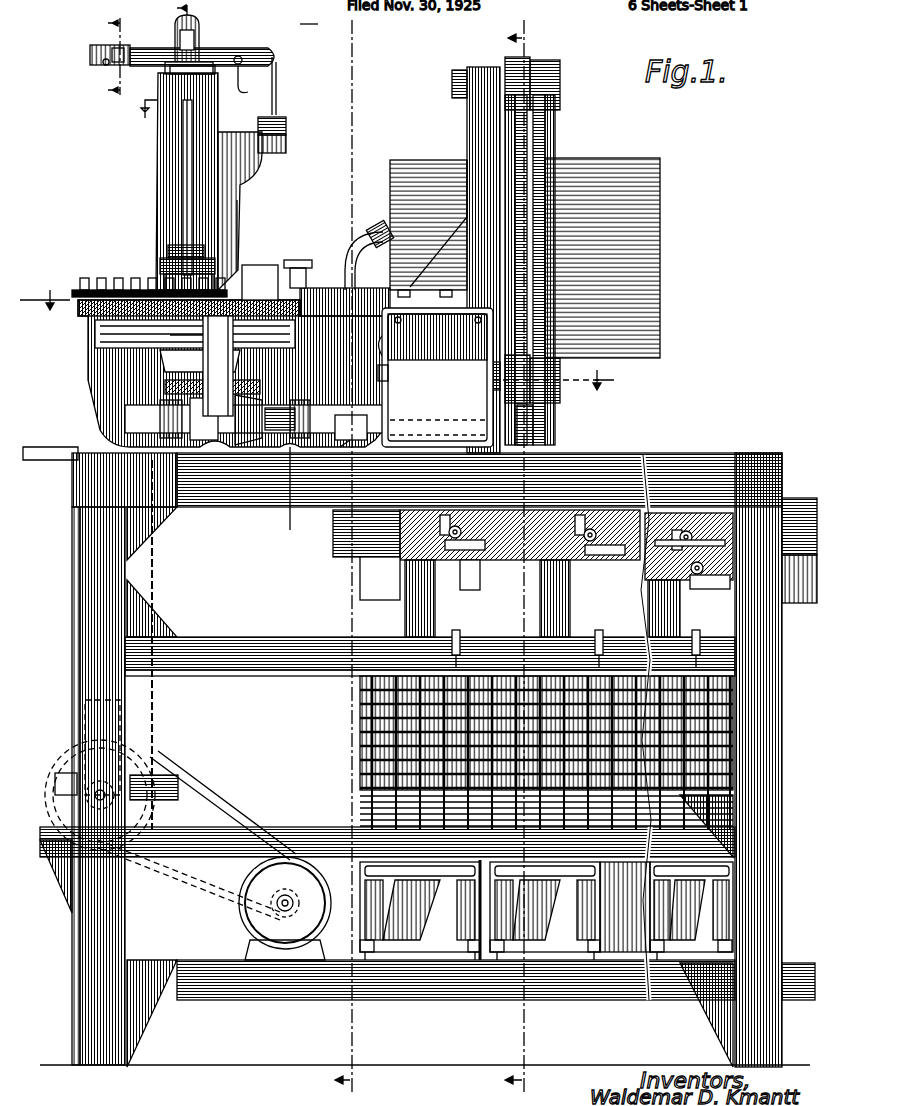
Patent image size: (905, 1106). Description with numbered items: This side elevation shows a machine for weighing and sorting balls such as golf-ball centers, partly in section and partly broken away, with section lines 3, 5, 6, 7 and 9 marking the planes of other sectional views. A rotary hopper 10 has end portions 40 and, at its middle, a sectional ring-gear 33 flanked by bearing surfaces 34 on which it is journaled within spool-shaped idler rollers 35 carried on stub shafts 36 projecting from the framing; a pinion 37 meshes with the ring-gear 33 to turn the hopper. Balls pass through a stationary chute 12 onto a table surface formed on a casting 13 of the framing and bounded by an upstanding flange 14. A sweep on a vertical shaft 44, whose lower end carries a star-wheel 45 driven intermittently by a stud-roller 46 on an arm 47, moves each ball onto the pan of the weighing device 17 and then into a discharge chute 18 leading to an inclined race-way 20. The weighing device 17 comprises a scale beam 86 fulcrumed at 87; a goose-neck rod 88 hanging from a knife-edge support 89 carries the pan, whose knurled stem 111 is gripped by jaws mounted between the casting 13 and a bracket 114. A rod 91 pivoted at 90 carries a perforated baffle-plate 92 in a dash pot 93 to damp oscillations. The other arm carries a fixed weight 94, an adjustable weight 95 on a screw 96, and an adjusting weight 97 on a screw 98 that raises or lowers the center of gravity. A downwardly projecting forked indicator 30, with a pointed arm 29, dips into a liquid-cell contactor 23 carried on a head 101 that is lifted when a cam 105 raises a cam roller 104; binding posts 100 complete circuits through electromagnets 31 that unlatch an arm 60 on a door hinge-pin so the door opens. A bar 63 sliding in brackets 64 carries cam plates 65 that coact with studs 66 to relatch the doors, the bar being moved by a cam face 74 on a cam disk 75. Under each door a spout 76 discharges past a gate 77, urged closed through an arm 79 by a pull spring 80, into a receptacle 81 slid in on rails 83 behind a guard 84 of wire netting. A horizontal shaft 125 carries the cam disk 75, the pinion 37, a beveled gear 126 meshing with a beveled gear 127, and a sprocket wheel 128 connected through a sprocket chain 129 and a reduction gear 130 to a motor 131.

The section line 3- 3 is at (120, 55).
The section line 5- 5 is at (176, 68).
The section line 6- 6 is at (334, 555).
The section line 7- 7 is at (524, 558).
The section line 9- 9 is at (324, 335).
The rotary hopper 10 is at (602, 258).
The stationary chute 12 is at (360, 230).
The casting 13 is at (362, 325).
The upstanding flange 14 is at (315, 288).
The weighing device 17 is at (160, 148).
The discharge chute 18 is at (291, 501).
The inclined race-way 20 is at (793, 498).
The liquid-cell contactor 23 is at (175, 262).
The arm of forked indicator 29 is at (185, 244).
The forked indicator 30 is at (186, 200).
The electromagnets 31 is at (470, 560).
The sectional ring-gear 33 is at (546, 130).
The bearing surfaces 34 is at (512, 145).
The spool-shaped idler rollers 35 is at (545, 60).
The stub shafts 36 is at (560, 80).
The pinion 37 is at (535, 445).
The end portions of the hopper 40 is at (416, 160).
The vertical shaft 44 is at (300, 260).
The star-wheel 45 is at (390, 374).
The stud-roller 46 is at (160, 366).
The arm 47 is at (92, 332).
The arm 60 is at (430, 575).
The bar 63 is at (703, 550).
The brackets 64 is at (690, 535).
The cam plate 65 is at (400, 535).
The stud 66 is at (440, 545).
The cam face 74 is at (368, 428).
The cam disk 75 is at (350, 445).
The chute or spout 76 is at (410, 624).
The gate 77 is at (365, 732).
The arm 79 is at (458, 655).
The pull spring 80 is at (456, 632).
The receptacle 81 is at (546, 907).
The supporting rails 83 is at (370, 952).
The guard 84 is at (358, 815).
The scale beam 86 is at (226, 52).
The fulcrum 87 is at (172, 70).
The goose-neck rod 88 is at (240, 192).
The knife-edge support 89 is at (236, 78).
The pivot 90 is at (276, 58).
The rod 91 is at (280, 92).
The perforated baffle-plate 92 is at (288, 147).
The dash pot 93 is at (288, 122).
The weight 94 is at (90, 55).
The adjustable weight 95 is at (116, 48).
The screw 96 is at (106, 64).
The adjusting weight 97 is at (202, 35).
The screw 98 is at (180, 35).
The binding posts 100 is at (152, 278).
The head 101 is at (168, 268).
The cam roller 104 is at (165, 384).
The cam 105 is at (259, 283).
The knurled stem 111 is at (288, 268).
The bracket 114 is at (78, 318).
The horizontal shaft 125 is at (200, 447).
The beveled gear 126 is at (250, 447).
The beveled gear 127 is at (225, 447).
The sprocket wheel 128 is at (150, 400).
The sprocket chain 129 is at (157, 582).
The reduction gear 130 is at (138, 798).
The motor 131 is at (258, 926).